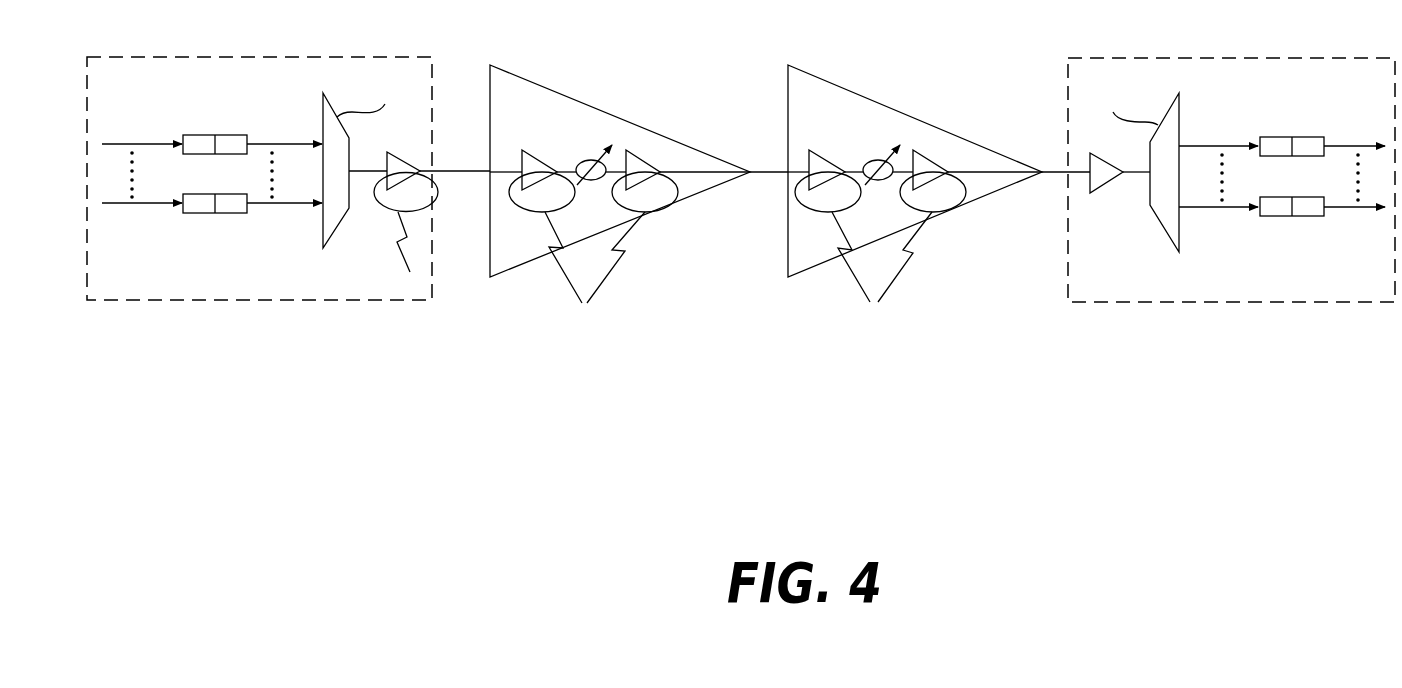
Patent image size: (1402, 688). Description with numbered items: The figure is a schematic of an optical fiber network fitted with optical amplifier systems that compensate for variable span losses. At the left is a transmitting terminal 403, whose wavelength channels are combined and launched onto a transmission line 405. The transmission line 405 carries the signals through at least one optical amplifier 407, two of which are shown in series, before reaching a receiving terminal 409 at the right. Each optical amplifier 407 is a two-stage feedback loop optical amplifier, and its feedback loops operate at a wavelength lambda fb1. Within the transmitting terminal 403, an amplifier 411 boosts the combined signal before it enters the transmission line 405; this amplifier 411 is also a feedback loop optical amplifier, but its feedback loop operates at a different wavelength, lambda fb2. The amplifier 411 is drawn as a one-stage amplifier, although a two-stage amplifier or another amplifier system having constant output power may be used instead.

The transmitting terminal 403 is at (287, 151).
The transmission line 405 is at (480, 173).
The optical amplifier 407 is at (563, 100).
The receiving terminal 409 is at (1157, 70).
The amplifier 411 is at (403, 168).